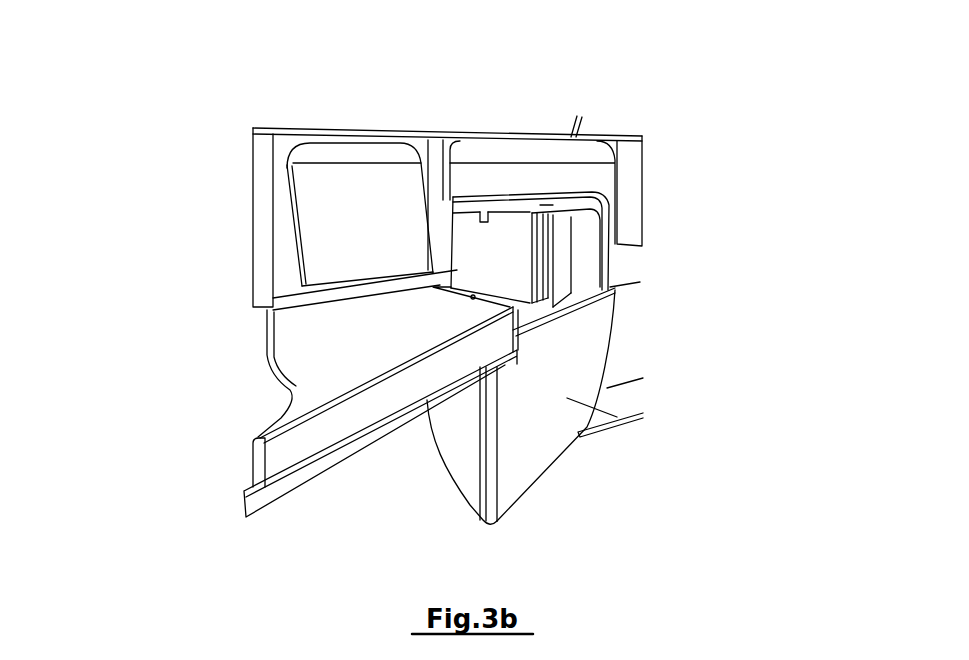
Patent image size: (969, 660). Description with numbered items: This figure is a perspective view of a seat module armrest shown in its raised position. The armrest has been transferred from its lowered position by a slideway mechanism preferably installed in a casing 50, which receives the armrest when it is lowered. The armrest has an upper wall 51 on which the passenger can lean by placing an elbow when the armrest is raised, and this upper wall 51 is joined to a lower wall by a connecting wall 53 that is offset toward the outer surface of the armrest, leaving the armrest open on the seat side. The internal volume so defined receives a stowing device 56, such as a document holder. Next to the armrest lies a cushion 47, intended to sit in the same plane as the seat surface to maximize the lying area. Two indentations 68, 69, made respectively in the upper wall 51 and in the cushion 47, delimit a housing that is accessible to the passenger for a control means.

The cushion 47 is at (353, 345).
The casing 50 is at (643, 415).
The upper wall 51 is at (553, 205).
The connecting wall 53 is at (578, 250).
The stowing device 56 is at (498, 250).
The indentation 68 is at (484, 212).
The indentation 69 is at (450, 297).